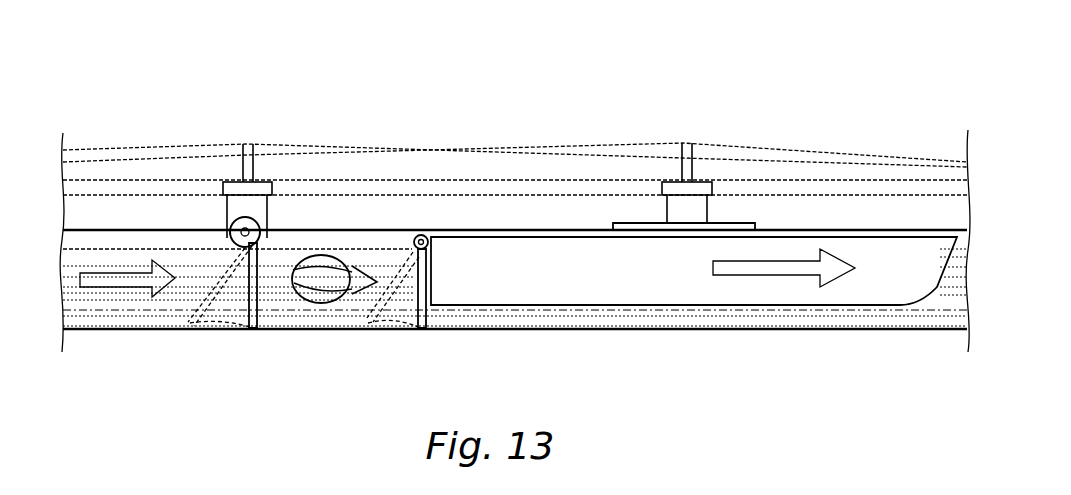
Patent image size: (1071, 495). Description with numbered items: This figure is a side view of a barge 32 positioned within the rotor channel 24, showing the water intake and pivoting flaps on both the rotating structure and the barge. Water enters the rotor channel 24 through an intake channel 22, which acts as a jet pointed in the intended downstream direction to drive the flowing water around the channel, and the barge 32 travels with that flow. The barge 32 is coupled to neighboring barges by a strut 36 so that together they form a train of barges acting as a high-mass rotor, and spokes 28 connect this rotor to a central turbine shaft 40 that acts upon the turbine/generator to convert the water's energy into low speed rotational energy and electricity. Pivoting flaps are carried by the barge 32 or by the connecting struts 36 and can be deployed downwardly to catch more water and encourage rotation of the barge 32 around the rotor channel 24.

The rotor channel 24 is at (158, 332).
The intake channel 22 is at (325, 305).
The strut 36 is at (478, 182).
The barge 32 is at (573, 255).
The spoke 28 is at (643, 143).
The central turbine shaft 40 is at (693, 208).